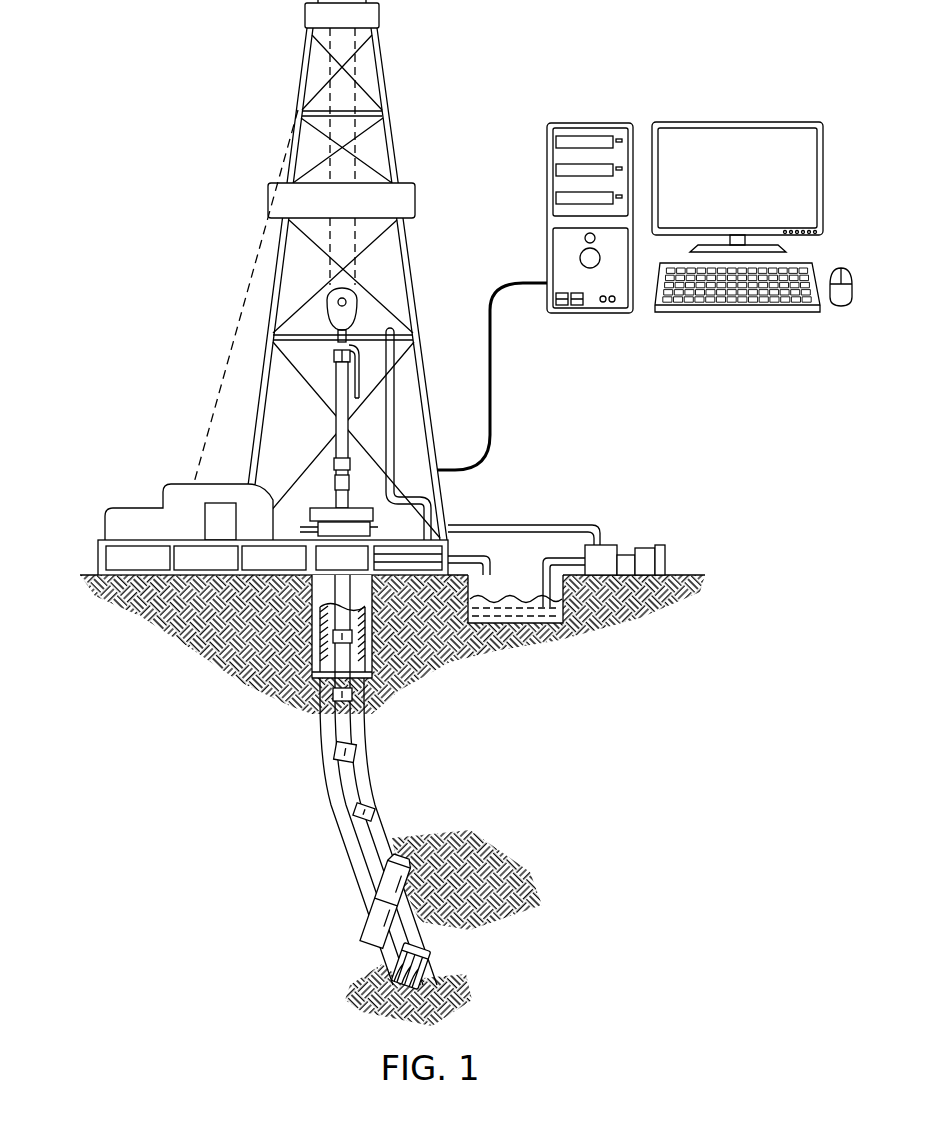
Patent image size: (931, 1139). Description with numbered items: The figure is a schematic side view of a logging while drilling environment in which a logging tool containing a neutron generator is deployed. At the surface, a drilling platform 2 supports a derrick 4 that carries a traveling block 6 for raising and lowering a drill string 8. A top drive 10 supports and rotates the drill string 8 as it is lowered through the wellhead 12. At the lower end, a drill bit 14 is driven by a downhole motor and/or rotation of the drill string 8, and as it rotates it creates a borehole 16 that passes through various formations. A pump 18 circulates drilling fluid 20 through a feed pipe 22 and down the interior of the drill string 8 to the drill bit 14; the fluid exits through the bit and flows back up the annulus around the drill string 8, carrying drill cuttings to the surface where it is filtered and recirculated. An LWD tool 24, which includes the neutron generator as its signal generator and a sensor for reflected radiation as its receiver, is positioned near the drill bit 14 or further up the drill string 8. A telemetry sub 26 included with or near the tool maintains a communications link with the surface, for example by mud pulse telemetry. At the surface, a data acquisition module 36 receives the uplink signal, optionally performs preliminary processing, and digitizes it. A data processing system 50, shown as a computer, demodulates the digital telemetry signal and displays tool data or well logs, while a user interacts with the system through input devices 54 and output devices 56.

The drilling platform 2 is at (98, 558).
The derrick 4 is at (393, 103).
The traveling block 6 is at (363, 308).
The drill string 8 is at (350, 720).
The top drive 10 is at (333, 383).
The wellhead 12 is at (325, 497).
The drill bit 14 is at (427, 943).
The borehole 16 is at (368, 782).
The pump 18 is at (615, 545).
The drilling fluid 20 is at (508, 597).
The feed pipe 22 is at (512, 525).
The LWD tool 24 is at (332, 750).
The telemetry sub 26 is at (330, 758).
The data acquisition module 36 is at (200, 515).
The data processing system 50 is at (590, 123).
The input devices 54 is at (740, 312).
The output devices 56 is at (738, 122).